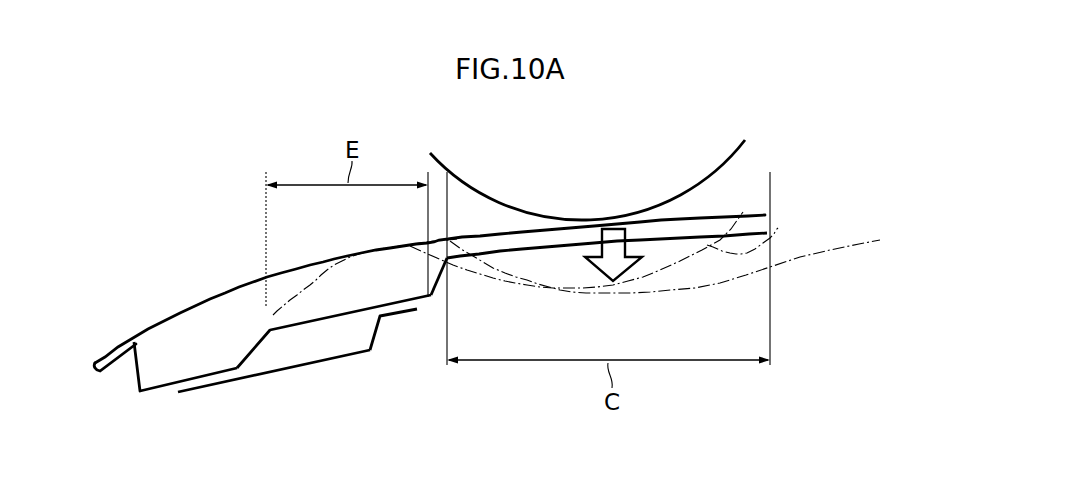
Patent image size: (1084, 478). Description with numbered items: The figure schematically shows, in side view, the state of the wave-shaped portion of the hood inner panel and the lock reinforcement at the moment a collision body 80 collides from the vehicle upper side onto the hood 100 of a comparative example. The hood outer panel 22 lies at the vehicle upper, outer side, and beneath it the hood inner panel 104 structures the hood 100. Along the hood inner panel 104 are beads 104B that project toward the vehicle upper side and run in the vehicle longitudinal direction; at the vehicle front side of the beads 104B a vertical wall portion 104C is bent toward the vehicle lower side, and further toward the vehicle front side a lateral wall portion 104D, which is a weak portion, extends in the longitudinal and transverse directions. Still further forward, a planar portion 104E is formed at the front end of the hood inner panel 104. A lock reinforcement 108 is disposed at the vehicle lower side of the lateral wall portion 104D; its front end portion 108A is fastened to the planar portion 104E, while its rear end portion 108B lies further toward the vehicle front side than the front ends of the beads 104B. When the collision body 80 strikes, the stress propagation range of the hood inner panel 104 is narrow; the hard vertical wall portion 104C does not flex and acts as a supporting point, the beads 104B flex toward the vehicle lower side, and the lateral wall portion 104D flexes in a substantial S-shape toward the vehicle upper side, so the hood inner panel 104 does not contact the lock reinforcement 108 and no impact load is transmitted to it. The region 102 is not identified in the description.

The hood 100 is at (225, 213).
The guide member 102 is at (197, 263).
The hood outer panel 22 is at (177, 305).
The hood inner panel 104 is at (423, 300).
The bead 104B is at (547, 252).
The vertical wall portion 104C is at (441, 278).
The lateral wall portion 104D is at (358, 307).
The planar portion 104E is at (165, 383).
The lock reinforcement 108 is at (285, 373).
The front end portion of the lock reinforcement 108A is at (207, 387).
The rear end portion of the lock reinforcement 108B is at (413, 311).
The collision body 80 is at (720, 170).